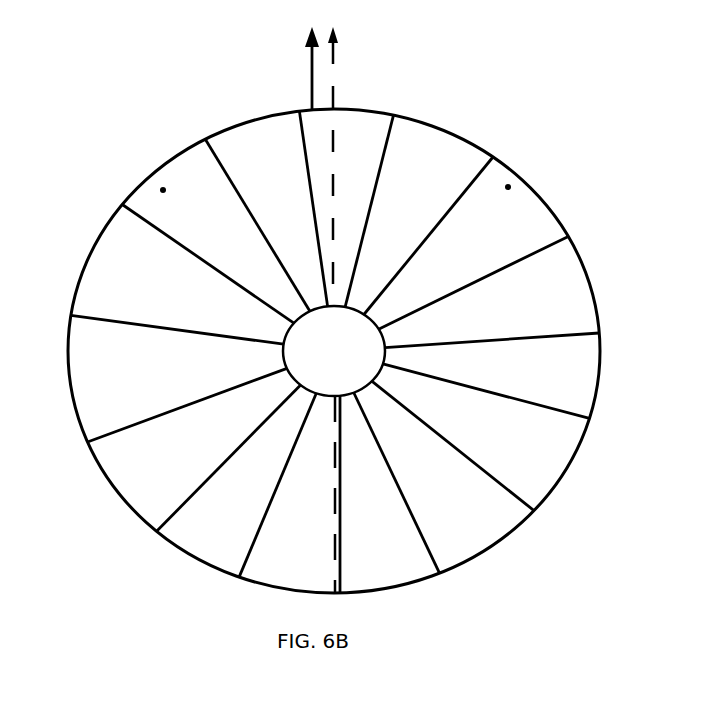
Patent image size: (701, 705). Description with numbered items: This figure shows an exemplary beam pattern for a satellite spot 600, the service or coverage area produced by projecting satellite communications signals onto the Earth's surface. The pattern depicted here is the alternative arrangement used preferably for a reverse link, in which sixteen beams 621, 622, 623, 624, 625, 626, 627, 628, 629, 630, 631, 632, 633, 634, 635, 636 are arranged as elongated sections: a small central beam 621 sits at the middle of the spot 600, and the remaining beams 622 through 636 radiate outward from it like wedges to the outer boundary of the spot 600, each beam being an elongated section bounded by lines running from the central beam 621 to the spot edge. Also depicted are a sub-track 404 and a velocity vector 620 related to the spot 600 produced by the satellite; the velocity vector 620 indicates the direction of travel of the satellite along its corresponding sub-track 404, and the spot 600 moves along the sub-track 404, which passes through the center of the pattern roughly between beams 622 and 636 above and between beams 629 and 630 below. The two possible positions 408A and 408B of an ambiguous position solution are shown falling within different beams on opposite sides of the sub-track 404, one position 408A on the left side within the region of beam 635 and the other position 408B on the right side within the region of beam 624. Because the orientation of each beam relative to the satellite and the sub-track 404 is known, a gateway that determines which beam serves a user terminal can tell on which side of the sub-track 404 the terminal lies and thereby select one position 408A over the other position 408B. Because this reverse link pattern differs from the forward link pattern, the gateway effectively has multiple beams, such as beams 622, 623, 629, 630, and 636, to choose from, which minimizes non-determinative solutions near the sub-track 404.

The spot 600 is at (540, 81).
The beam 621 is at (334, 351).
The beam 622 is at (329, 208).
The beam 623 is at (394, 211).
The beam 624 is at (438, 236).
The beam 625 is at (474, 282).
The beam 626 is at (492, 359).
The beam 627 is at (486, 406).
The beam 628 is at (453, 445).
The beam 629 is at (397, 483).
The beam 630 is at (310, 494).
The beam 631 is at (262, 485).
The beam 632 is at (227, 458).
The beam 633 is at (188, 401).
The beam 634 is at (177, 310).
The beam 635 is at (208, 264).
The beam 636 is at (257, 225).
The sub-track 404 is at (311, 89).
The velocity vector 620 is at (334, 90).
The possible position 408A is at (163, 190).
The possible position 408B is at (508, 187).